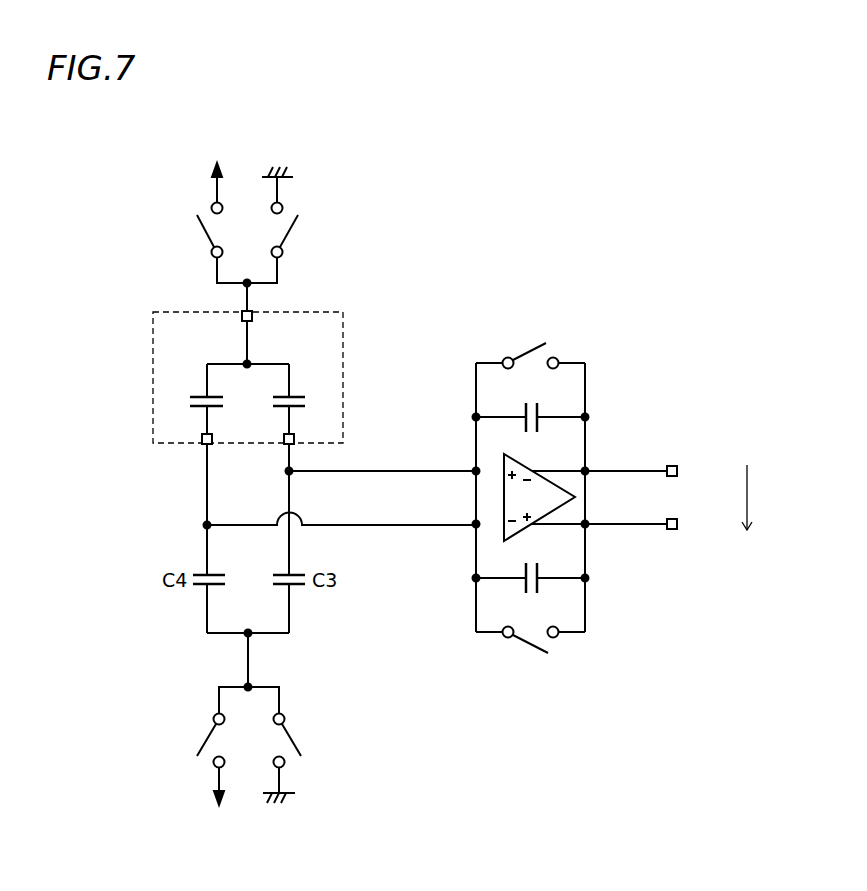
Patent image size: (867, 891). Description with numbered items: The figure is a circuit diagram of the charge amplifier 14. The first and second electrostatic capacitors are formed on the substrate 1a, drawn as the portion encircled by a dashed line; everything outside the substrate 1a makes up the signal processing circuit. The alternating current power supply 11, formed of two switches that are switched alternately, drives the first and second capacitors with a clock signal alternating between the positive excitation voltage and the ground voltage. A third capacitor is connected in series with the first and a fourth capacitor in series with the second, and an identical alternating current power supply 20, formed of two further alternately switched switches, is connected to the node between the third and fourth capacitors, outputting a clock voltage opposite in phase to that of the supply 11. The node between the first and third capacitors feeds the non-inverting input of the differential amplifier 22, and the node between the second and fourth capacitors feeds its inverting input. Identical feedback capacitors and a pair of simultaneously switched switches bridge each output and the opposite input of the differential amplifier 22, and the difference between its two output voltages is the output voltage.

The alternating current power supply 11 is at (168, 197).
The substrate 1a is at (345, 363).
The alternating current power supply 20 is at (170, 698).
The charge amplifier 14 is at (424, 715).
The differential amplifier 22 is at (583, 497).